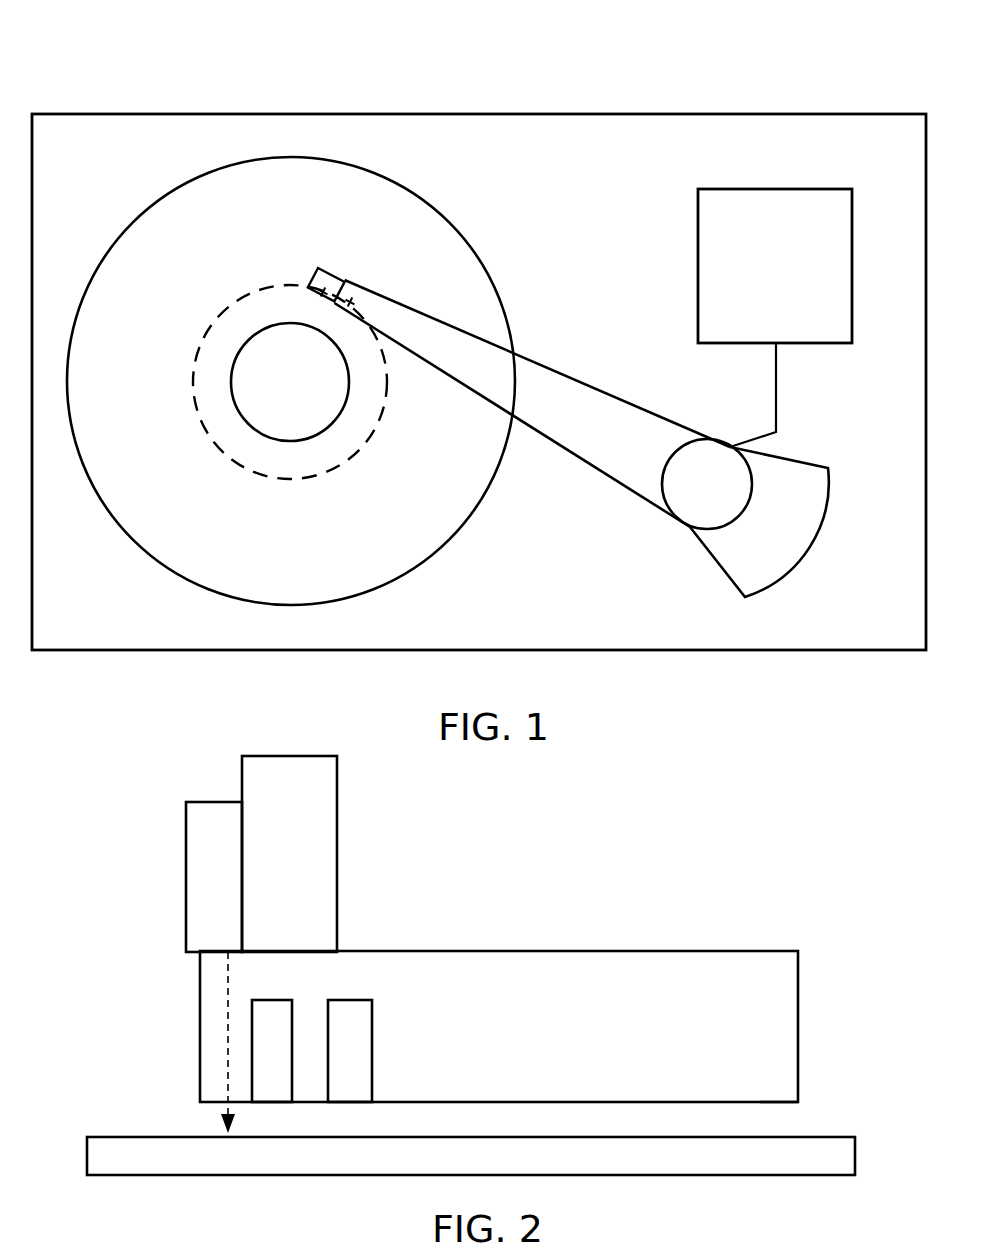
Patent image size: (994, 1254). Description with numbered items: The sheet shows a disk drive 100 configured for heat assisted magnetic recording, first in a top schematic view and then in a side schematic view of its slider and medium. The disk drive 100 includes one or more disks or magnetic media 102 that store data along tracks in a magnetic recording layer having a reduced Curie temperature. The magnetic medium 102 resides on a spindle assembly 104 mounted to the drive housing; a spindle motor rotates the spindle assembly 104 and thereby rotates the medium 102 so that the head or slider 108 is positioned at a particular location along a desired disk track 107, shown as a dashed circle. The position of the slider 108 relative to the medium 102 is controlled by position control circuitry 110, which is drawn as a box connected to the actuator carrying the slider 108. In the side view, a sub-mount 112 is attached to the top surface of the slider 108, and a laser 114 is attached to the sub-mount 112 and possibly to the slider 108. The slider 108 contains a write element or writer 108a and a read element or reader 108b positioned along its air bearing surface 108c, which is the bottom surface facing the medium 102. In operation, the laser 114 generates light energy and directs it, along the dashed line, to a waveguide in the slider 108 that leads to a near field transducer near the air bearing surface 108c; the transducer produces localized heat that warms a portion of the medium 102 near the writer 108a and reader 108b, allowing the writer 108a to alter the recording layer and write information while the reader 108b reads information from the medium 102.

In FIG. 1, the disk drive 100 is at (189, 72).
In FIG. 1, the magnetic medium 102 is at (450, 219).
In FIG. 2, the magnetic medium 102 is at (855, 1155).
In FIG. 1, the spindle assembly 104 is at (290, 382).
In FIG. 1, the disk track 107 is at (239, 297).
In FIG. 1, the slider 108 is at (344, 286).
In FIG. 2, the slider 108 is at (715, 950).
In FIG. 2, the write element 108a is at (260, 1000).
In FIG. 2, the read element 108b is at (360, 1000).
In FIG. 2, the air bearing surface 108c is at (787, 1103).
In FIG. 1, the position control circuitry 110 is at (775, 318).
In FIG. 2, the sub-mount 112 is at (307, 756).
In FIG. 2, the laser 114 is at (200, 802).